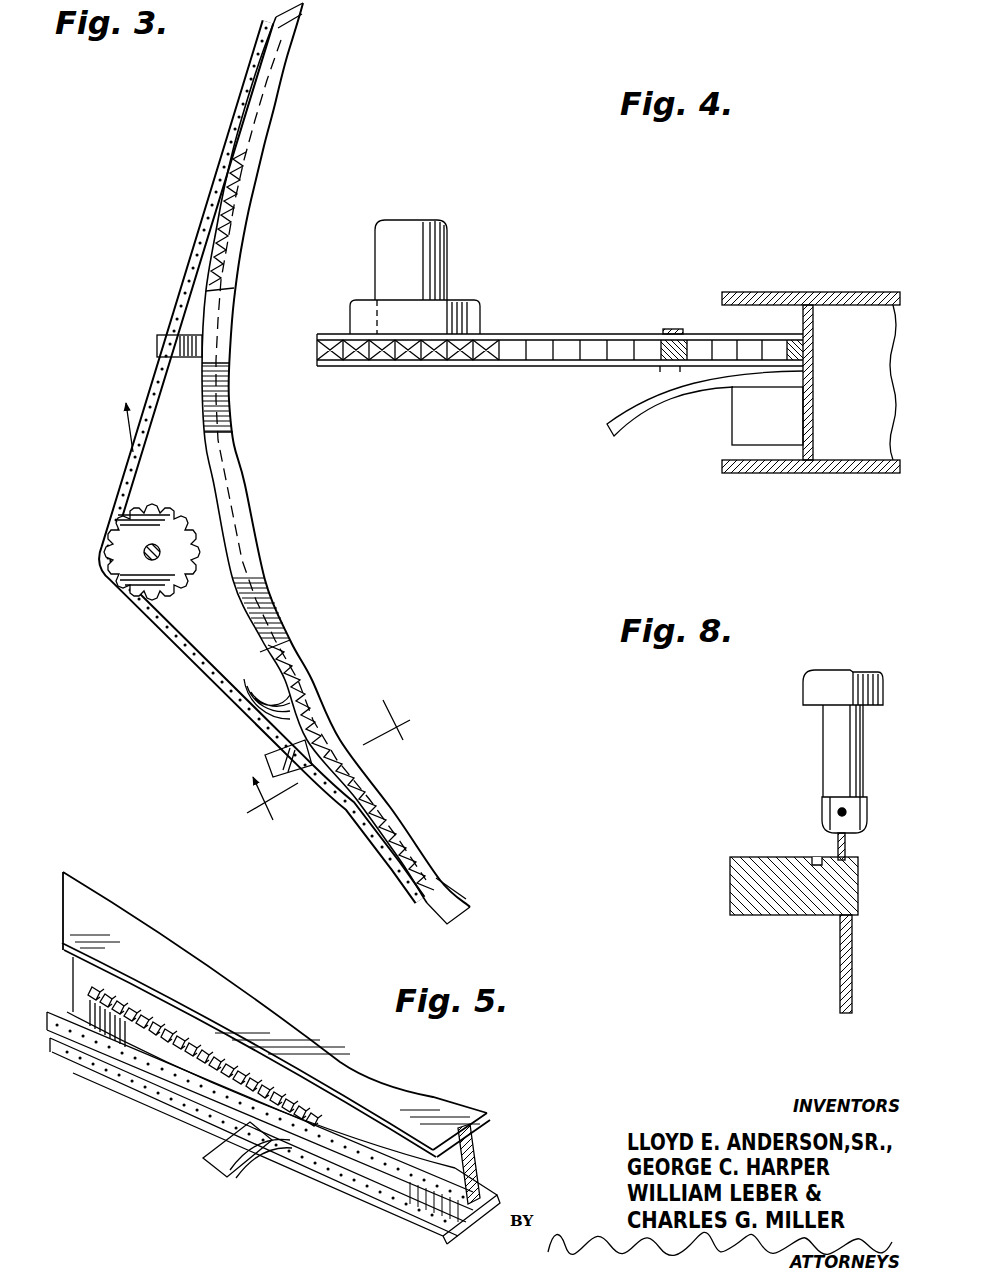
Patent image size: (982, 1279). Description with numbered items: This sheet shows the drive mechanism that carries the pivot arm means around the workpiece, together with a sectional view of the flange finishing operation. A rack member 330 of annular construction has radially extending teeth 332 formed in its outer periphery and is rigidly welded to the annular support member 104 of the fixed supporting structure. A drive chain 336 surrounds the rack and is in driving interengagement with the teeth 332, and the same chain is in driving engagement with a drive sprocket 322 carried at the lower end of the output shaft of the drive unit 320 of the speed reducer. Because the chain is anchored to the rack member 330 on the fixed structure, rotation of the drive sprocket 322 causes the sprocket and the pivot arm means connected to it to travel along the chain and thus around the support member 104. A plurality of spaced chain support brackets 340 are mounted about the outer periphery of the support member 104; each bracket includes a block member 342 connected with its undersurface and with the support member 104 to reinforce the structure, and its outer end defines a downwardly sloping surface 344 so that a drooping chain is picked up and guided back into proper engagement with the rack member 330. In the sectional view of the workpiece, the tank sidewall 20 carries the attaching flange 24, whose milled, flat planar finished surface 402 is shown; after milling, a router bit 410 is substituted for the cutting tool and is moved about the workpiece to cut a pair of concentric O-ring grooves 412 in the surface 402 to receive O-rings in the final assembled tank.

In FIG. 3, the annular support member 104 is at (413, 837).
In FIG. 4, the annular support member 104 is at (840, 290).
In FIG. 5, the annular support member 104 is at (480, 1094).
In FIG. 3, the drive motor 320 is at (161, 560).
In FIG. 4, the drive motor 320 is at (447, 245).
In FIG. 3, the drive sprocket 322 is at (131, 536).
In FIG. 4, the drive sprocket 322 is at (432, 366).
In FIG. 3, the rack member 330 is at (290, 683).
In FIG. 4, the rack member 330 is at (806, 352).
In FIG. 5, the rack member 330 is at (163, 1027).
In FIG. 3, the teeth 332 is at (252, 687).
In FIG. 5, the teeth 332 is at (107, 993).
In FIG. 3, the drive chain 336 is at (200, 668).
In FIG. 4, the drive chain 336 is at (568, 334).
In FIG. 5, the drive chain 336 is at (132, 1075).
In FIG. 3, the chain support bracket 340 is at (154, 332).
In FIG. 4, the chain support bracket 340 is at (667, 405).
In FIG. 5, the chain support bracket 340 is at (255, 1160).
In FIG. 4, the block member 342 is at (788, 420).
In FIG. 4, the downwardly sloping surface 344 is at (605, 410).
In FIG. 8, the router bit 410 is at (818, 731).
In FIG. 8, the O-ring grooves 412 is at (814, 857).
In FIG. 8, the finished surface 402 is at (740, 857).
In FIG. 8, the attaching flange 24 is at (738, 880).
In FIG. 8, the sidewall 20 is at (840, 975).